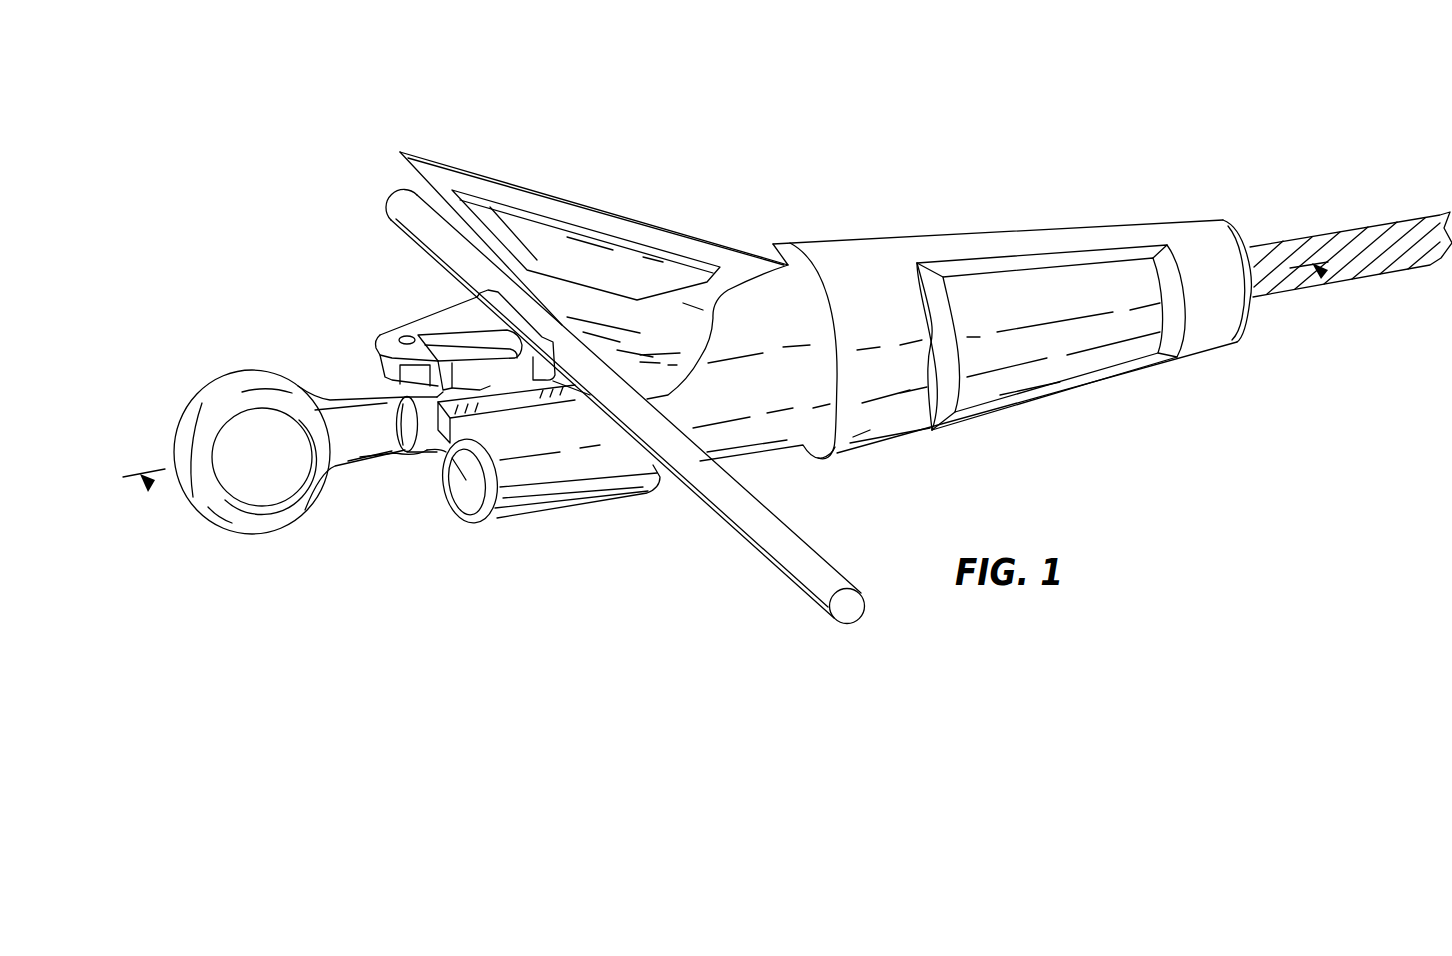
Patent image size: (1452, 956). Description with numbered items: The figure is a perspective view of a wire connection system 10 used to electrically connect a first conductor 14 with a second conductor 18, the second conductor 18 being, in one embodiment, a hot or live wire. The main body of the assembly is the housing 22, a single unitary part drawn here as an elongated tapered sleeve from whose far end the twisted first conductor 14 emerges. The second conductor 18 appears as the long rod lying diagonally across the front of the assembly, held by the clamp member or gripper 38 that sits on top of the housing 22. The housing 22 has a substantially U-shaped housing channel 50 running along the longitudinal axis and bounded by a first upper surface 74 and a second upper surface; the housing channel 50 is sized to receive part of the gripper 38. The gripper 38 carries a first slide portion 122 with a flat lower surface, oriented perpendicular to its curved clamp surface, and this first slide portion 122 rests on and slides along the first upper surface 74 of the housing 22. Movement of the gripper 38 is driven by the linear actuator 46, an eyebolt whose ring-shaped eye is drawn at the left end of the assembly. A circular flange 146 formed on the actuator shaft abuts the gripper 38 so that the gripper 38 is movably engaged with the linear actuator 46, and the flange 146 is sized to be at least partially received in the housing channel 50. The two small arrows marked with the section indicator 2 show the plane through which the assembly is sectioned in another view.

The connection system 10 is at (730, 110).
The first conductor 14 is at (1392, 238).
The second conductor 18 is at (850, 617).
The housing 22 is at (878, 253).
The clamp member or gripper 38 is at (457, 327).
The linear actuator 46 is at (238, 403).
The housing channel 50 is at (460, 474).
The first upper surface 74 is at (500, 403).
The first slide portion 122 is at (477, 387).
The flange 146 is at (447, 455).
The section line 2 is at (150, 486).